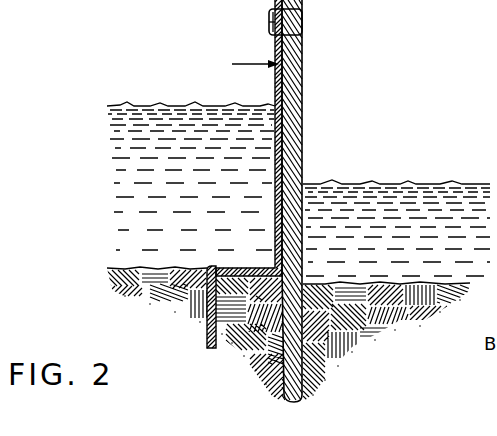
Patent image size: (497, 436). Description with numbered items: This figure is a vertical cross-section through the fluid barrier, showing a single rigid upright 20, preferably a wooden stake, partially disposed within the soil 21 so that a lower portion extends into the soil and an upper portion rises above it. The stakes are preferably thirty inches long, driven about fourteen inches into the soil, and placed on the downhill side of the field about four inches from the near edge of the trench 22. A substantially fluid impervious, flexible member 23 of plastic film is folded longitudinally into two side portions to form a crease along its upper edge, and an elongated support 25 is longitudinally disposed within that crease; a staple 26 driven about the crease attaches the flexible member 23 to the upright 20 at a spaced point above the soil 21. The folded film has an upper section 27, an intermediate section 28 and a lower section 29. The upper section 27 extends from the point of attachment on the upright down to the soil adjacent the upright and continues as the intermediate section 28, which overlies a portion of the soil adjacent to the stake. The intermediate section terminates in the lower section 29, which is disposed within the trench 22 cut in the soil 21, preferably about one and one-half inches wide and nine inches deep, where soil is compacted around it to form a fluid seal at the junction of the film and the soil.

The rigid upright 20 is at (296, 52).
The soil 21 is at (380, 337).
The trench 22 is at (205, 322).
The flexible member 23 is at (239, 65).
The elongated support 25 is at (302, 18).
The staple 26 is at (270, 23).
The upper section 27 is at (278, 88).
The intermediate section 28 is at (258, 298).
The lower section 29 is at (205, 292).